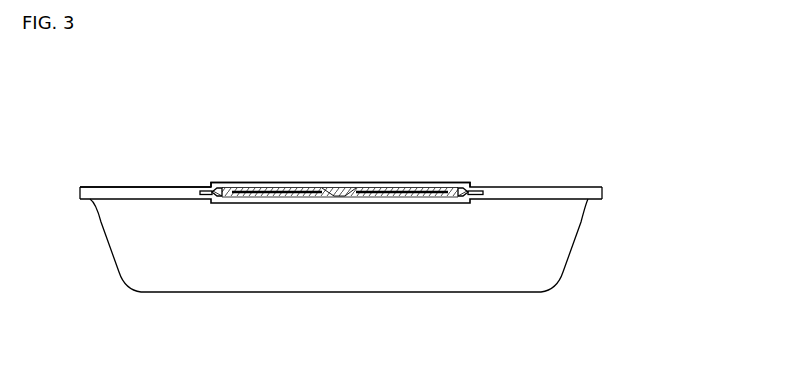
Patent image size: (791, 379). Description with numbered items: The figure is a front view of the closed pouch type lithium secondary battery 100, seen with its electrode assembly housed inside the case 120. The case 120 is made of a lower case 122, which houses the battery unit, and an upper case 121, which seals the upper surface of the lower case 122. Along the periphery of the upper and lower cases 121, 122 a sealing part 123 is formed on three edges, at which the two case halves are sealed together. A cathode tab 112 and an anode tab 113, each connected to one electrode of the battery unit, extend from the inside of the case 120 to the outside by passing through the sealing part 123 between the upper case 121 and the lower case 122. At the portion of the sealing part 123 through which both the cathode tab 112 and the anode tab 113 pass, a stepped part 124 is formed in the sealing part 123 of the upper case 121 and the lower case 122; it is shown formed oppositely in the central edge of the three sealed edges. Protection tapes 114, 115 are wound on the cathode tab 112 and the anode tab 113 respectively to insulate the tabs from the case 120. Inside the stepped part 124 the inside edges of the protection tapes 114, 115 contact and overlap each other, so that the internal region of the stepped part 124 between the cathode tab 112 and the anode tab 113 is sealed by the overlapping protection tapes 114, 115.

The pouch type lithium secondary battery 100 is at (95, 91).
The cathode tab 112 is at (420, 196).
The anode tab 113 is at (258, 198).
The protection tape 114 is at (457, 197).
The protection tape 115 is at (213, 198).
The case 120 is at (659, 163).
The upper case 121 is at (602, 187).
The lower case 122 is at (602, 199).
The sealing part 123 is at (153, 194).
The stepped part 124 is at (471, 176).